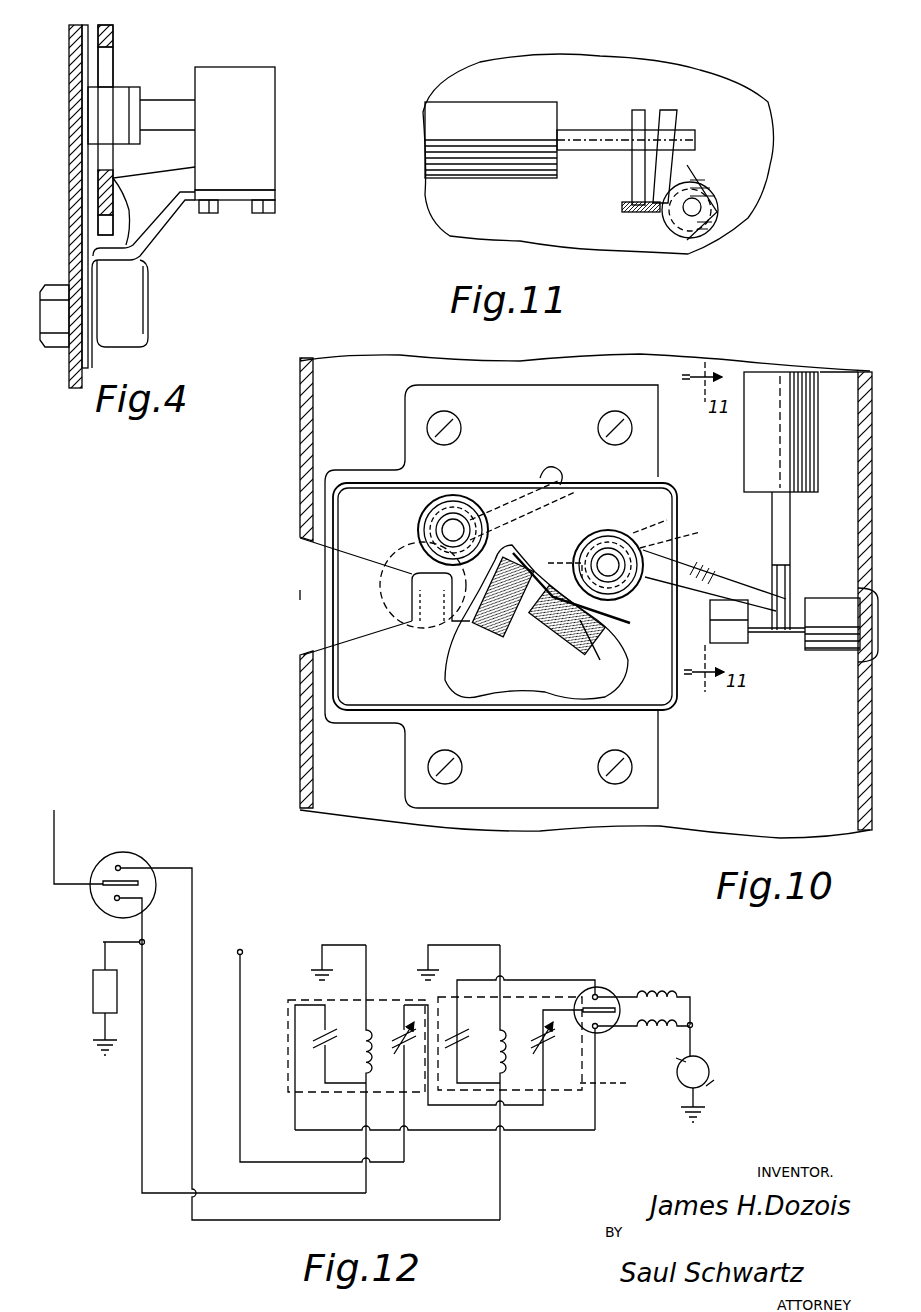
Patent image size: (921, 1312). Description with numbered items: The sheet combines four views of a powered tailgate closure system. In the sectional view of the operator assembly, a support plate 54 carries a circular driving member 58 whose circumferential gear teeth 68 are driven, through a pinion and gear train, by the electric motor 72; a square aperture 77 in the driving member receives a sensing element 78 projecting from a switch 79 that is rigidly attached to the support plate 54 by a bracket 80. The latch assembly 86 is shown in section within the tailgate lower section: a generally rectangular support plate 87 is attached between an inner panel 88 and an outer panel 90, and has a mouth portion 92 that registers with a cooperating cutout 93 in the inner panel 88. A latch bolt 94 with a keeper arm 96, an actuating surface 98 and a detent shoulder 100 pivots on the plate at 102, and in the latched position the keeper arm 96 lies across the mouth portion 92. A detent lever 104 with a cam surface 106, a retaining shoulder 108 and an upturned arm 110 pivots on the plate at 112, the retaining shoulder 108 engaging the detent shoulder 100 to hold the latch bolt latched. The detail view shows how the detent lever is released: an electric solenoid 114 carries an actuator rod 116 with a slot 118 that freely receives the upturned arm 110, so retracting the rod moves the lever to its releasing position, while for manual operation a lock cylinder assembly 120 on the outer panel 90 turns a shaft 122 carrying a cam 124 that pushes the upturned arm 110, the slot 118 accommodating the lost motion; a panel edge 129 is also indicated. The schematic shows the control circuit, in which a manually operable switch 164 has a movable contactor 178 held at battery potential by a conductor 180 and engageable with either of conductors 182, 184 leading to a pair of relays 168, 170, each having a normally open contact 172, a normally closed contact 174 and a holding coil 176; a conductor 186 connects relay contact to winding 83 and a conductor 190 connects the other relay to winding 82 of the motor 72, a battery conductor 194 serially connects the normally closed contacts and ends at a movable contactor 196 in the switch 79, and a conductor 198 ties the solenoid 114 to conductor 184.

In FIG. 4, the support plate 54 is at (74, 62).
In FIG. 4, the driving member 58 is at (114, 30).
In FIG. 4, the gear teeth 68 is at (100, 226).
In FIG. 4, the square aperture 77 is at (113, 52).
In FIG. 4, the sensing element 78 is at (163, 112).
In FIG. 4, the switch 79 is at (255, 148).
In FIG. 12, the switch 79 is at (625, 992).
In FIG. 4, the bracket 80 is at (130, 297).
In FIG. 10, the latch assembly 86 is at (670, 378).
In FIG. 10, the support plate 87 is at (532, 385).
In FIG. 10, the inner panel 88 is at (303, 408).
In FIG. 10, the outer panel 90 is at (864, 432).
In FIG. 10, the mouth portion 92 is at (380, 565).
In FIG. 10, the cutout 93 is at (302, 650).
In FIG. 10, the latch bolt 94 is at (522, 567).
In FIG. 10, the keeper arm 96 is at (395, 600).
In FIG. 10, the actuating surface 98 is at (440, 621).
In FIG. 10, the detent shoulder 100 is at (560, 578).
In FIG. 10, the latch bolt pivot 102 is at (465, 530).
In FIG. 11, the detent lever 104 is at (622, 208).
In FIG. 10, the detent lever 104 is at (590, 665).
In FIG. 10, the cam surface 106 is at (525, 665).
In FIG. 10, the retaining shoulder 108 is at (490, 640).
In FIG. 11, the upturned arm 110 is at (670, 112).
In FIG. 10, the upturned arm 110 is at (780, 600).
In FIG. 10, the detent lever pivot 112 is at (608, 555).
In FIG. 11, the electric solenoid 114 is at (515, 118).
In FIG. 10, the electric solenoid 114 is at (775, 385).
In FIG. 12, the electric solenoid 114 is at (100, 992).
In FIG. 11, the actuator rod 116 is at (588, 132).
In FIG. 10, the actuator rod 116 is at (772, 520).
In FIG. 11, the slot 118 is at (640, 132).
In FIG. 10, the slot 118 is at (788, 580).
In FIG. 11, the lock cylinder assembly 120 is at (705, 228).
In FIG. 10, the lock cylinder assembly 120 is at (828, 620).
In FIG. 11, the shaft 122 is at (700, 206).
In FIG. 10, the shaft 122 is at (795, 634).
In FIG. 11, the cam 124 is at (700, 172).
In FIG. 10, the cam 124 is at (745, 640).
In FIG. 10, the housing top 129 is at (830, 372).
In FIG. 12, the manually operable electrical switch 164 is at (112, 852).
In FIG. 12, the relay 168 is at (290, 1000).
In FIG. 12, the relay 170 is at (621, 1087).
In FIG. 12, the normally open contact 172 is at (320, 1036).
In FIG. 12, the normally closed contact 174 is at (400, 1050).
In FIG. 12, the holding coil 176 is at (362, 1075).
In FIG. 12, the movable contactor 178 is at (112, 888).
In FIG. 12, the conductor 180 is at (54, 836).
In FIG. 12, the conductor 182 is at (192, 906).
In FIG. 12, the conductor 184 is at (142, 1072).
In FIG. 12, the conductor 186 is at (543, 980).
In FIG. 12, the conductor 190 is at (320, 1130).
In FIG. 12, the conductor 194 is at (240, 1040).
In FIG. 12, the movable contactor 196 is at (598, 990).
In FIG. 12, the conductor 198 is at (118, 942).
In FIG. 12, the winding 82 is at (645, 1030).
In FIG. 12, the winding 83 is at (680, 990).
In FIG. 12, the electric motor 72 is at (705, 1068).